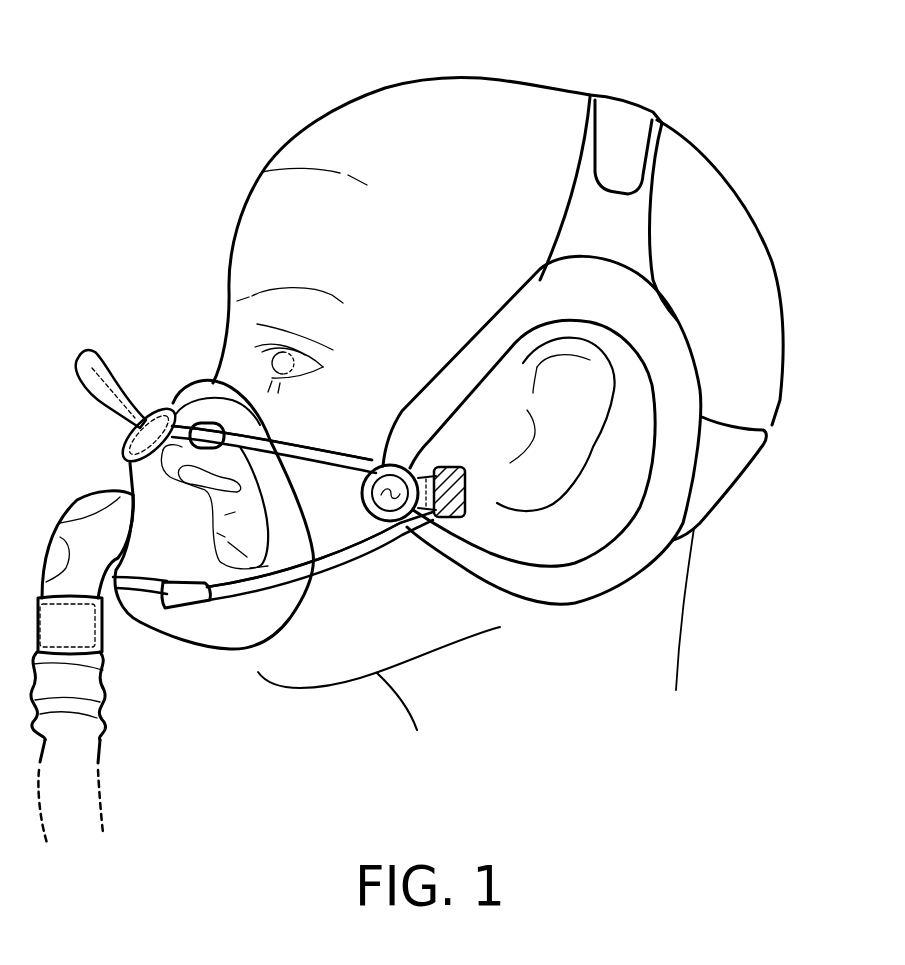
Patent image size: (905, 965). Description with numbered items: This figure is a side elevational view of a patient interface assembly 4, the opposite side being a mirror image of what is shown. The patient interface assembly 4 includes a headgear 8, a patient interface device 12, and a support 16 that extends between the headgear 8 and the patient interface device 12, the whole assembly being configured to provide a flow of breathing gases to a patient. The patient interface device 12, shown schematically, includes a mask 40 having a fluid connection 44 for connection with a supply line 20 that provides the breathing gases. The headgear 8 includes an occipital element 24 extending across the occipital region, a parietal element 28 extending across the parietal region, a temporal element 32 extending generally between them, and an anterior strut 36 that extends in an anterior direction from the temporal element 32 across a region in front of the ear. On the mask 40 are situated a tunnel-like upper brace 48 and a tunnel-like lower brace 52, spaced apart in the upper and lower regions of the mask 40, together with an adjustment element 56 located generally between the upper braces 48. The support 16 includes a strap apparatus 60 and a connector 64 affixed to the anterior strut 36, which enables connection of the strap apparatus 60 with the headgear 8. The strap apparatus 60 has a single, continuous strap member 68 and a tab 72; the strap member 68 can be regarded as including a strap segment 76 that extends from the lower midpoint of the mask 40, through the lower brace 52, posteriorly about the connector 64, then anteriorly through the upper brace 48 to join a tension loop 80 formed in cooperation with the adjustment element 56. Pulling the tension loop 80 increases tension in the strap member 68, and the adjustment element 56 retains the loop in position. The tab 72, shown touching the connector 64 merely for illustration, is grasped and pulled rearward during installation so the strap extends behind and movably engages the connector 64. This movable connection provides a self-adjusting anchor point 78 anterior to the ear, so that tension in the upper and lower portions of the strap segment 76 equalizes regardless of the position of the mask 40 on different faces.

The patient interface assembly 4 is at (162, 100).
The headgear 8 is at (612, 308).
The patient interface device 12 is at (214, 555).
The support 16 is at (333, 557).
The supply line 20 is at (100, 790).
The occipital element 24 is at (740, 453).
The parietal element 28 is at (650, 152).
The temporal element 32 is at (636, 553).
The anterior strut 36 is at (487, 318).
The mask 40 is at (184, 622).
The fluid connection 44 is at (75, 507).
The upper brace 48 is at (206, 432).
The lower brace 52 is at (183, 583).
The adjustment element 56 is at (157, 405).
The strap apparatus 60 is at (336, 457).
The connector 64 is at (383, 507).
The strap member 68 is at (300, 447).
The tab 72 is at (467, 497).
The strap segment 76 is at (360, 530).
The anchor point 78 is at (412, 442).
The tension loop 80 is at (77, 367).